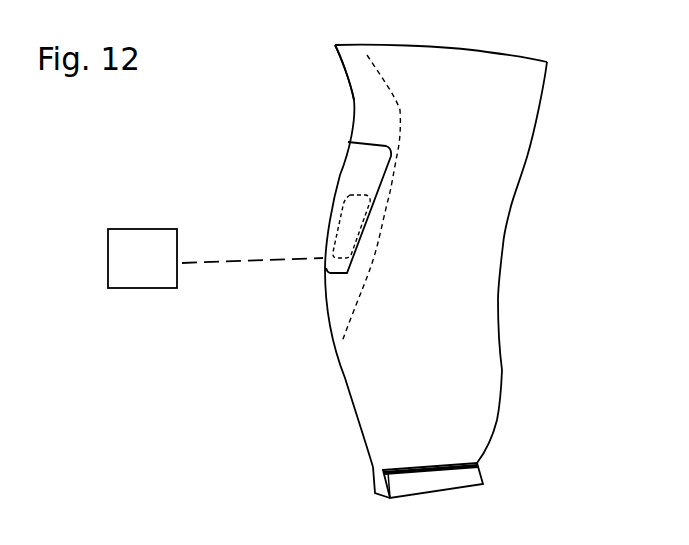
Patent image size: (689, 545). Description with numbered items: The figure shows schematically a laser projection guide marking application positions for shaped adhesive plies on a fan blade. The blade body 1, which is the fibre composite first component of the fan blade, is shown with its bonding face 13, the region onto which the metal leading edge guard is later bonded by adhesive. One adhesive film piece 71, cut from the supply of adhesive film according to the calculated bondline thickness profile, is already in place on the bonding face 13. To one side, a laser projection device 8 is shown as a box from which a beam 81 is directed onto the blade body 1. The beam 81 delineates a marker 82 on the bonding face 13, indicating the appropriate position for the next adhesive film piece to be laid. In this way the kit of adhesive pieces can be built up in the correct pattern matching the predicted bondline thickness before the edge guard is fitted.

The blade body 1 is at (487, 239).
The bonding face 13 is at (357, 87).
The adhesive film piece 71 is at (365, 173).
The marker 82 is at (347, 217).
The laser projection device 8 is at (153, 278).
The beam 81 is at (270, 263).